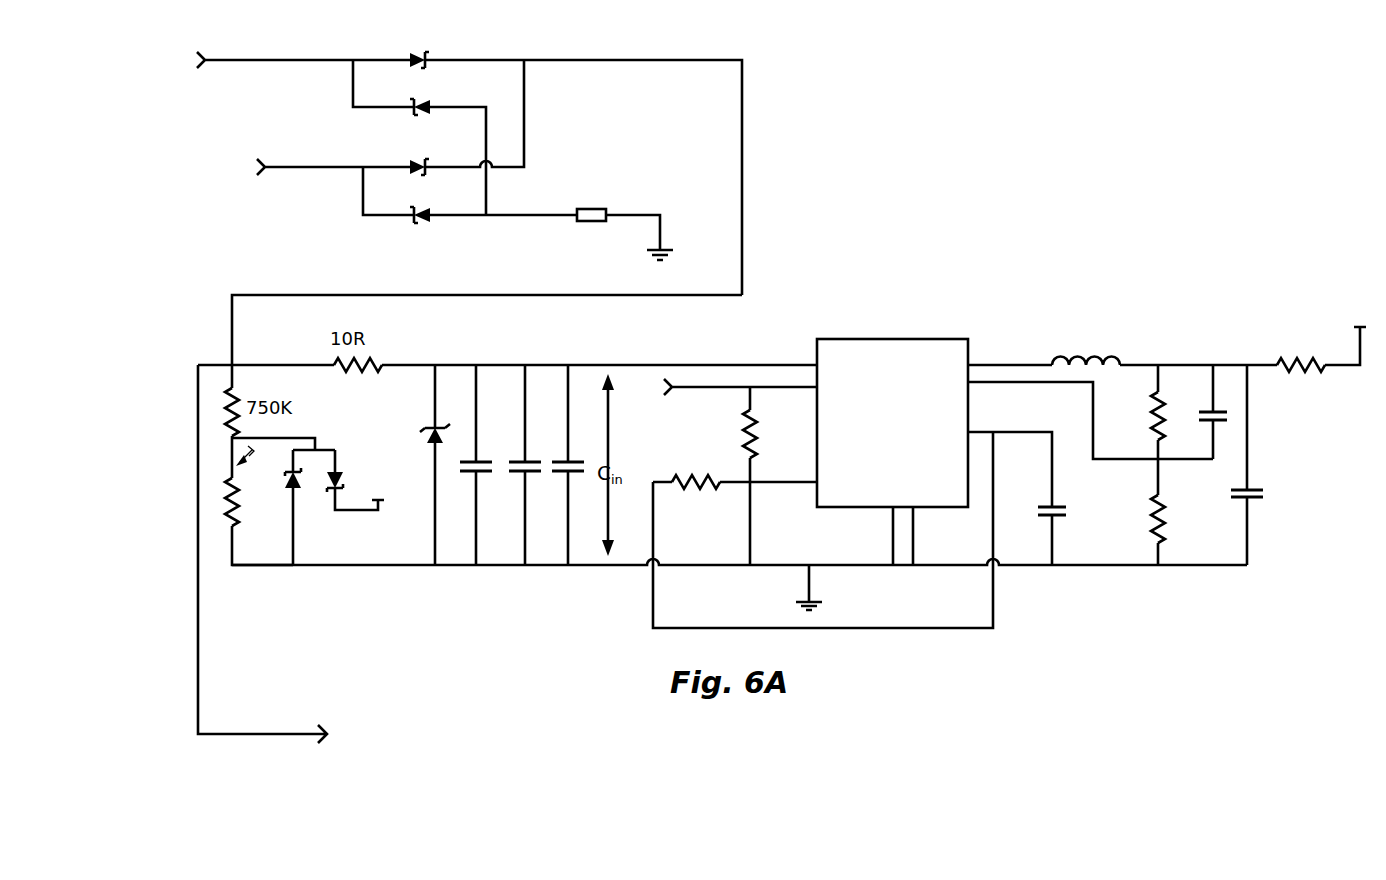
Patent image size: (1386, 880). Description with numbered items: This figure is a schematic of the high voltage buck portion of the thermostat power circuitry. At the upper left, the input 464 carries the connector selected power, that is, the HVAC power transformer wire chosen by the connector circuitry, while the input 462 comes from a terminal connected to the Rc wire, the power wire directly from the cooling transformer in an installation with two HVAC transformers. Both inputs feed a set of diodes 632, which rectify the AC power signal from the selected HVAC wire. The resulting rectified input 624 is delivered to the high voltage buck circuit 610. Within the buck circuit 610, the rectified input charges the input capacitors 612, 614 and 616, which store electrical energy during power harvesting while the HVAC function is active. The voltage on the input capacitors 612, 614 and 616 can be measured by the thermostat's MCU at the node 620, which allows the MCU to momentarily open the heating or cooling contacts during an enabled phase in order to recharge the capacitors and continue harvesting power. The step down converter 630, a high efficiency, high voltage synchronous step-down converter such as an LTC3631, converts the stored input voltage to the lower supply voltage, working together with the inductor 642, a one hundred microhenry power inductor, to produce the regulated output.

The input from the connector selected power 464 is at (306, 60).
The input from the Rc terminal 462 is at (343, 167).
The diodes 632 is at (440, 44).
The rectified input 624 is at (283, 295).
The high voltage buck circuit 610 is at (998, 432).
The input capacitor 612 is at (468, 452).
The input capacitor 614 is at (518, 452).
The input capacitor 616 is at (578, 452).
The node 620 is at (239, 464).
The step down converter 630 is at (906, 441).
The inductor 642 is at (1093, 328).